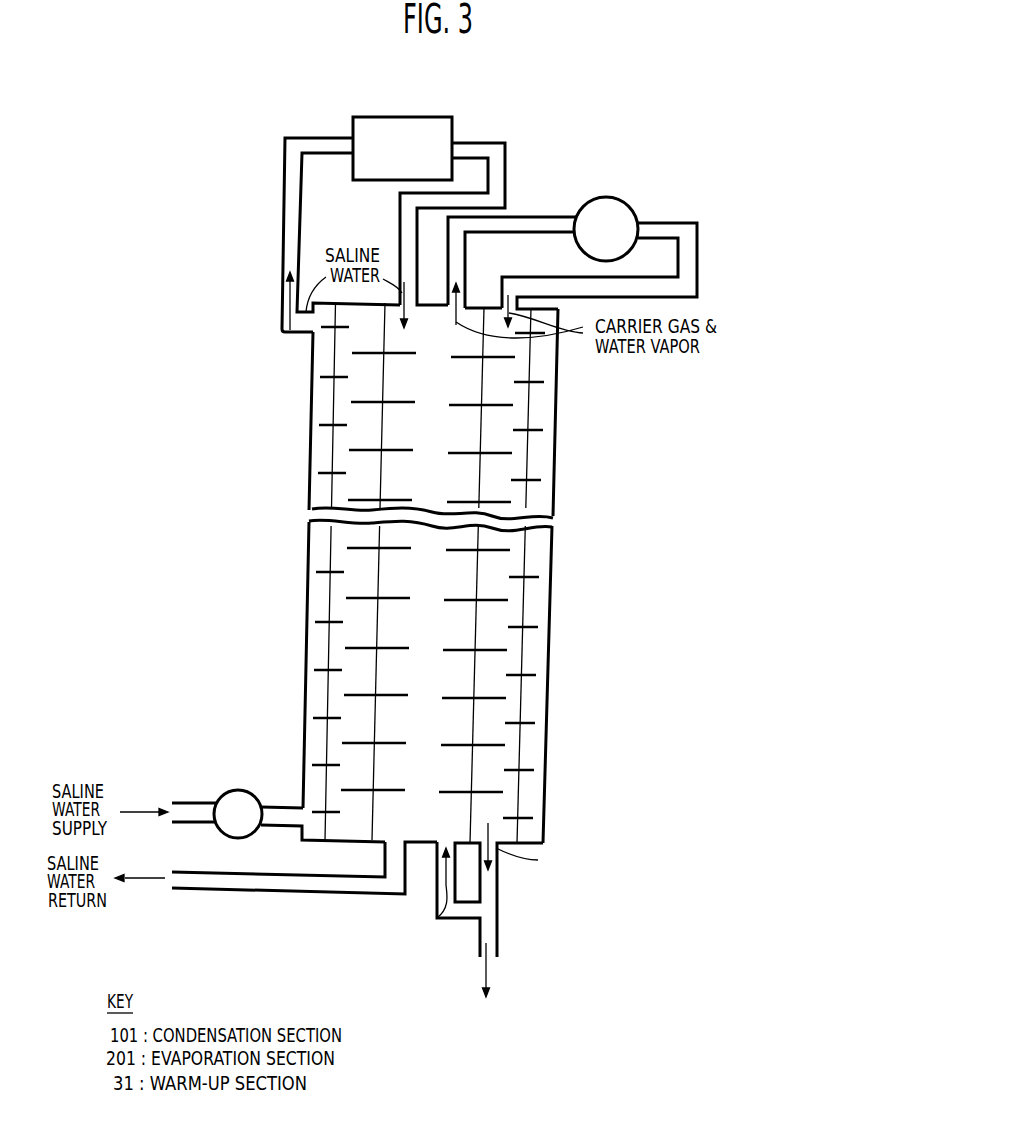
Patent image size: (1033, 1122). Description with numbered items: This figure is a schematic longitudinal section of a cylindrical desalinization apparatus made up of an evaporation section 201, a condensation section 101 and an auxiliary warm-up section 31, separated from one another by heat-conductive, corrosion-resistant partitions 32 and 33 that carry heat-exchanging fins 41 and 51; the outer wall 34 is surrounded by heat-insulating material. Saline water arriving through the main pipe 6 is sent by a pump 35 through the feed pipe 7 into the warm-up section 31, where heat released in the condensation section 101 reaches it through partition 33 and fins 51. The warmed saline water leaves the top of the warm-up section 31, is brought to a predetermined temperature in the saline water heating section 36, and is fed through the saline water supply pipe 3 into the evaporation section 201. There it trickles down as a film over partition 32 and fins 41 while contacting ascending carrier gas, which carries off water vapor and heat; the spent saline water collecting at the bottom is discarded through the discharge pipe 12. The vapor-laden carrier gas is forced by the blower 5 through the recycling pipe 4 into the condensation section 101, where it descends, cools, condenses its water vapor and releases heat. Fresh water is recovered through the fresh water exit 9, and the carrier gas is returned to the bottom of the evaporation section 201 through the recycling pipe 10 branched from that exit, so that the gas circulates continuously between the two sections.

The saline water supply pipe 3 is at (484, 143).
The recycling pipe 4 is at (523, 218).
The blower 5 is at (620, 200).
The main pipe 6 is at (307, 553).
The feed pipe 7 is at (287, 805).
The fresh water exit 9 is at (500, 931).
The recycling pipe 10 is at (435, 882).
The discharge pipe 12 is at (257, 871).
The warm-up section 31 is at (533, 742).
The partition 32 is at (482, 418).
The partition 33 is at (530, 453).
The outer wall 34 is at (502, 503).
The pump 35 is at (252, 790).
The saline water heating section 36 is at (412, 118).
The heat-exchanging fins 41 is at (553, 508).
The heat-exchanging fins 51 is at (533, 577).
The condensation section 101 is at (492, 667).
The evaporation section 201 is at (440, 633).